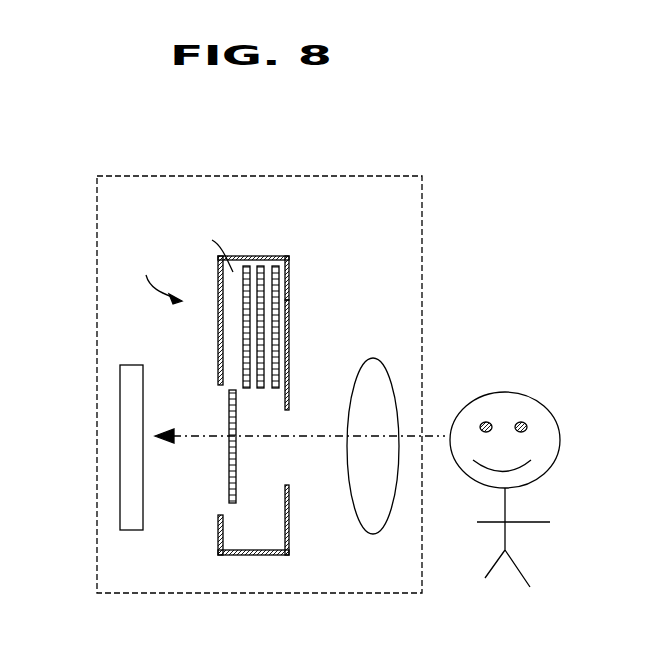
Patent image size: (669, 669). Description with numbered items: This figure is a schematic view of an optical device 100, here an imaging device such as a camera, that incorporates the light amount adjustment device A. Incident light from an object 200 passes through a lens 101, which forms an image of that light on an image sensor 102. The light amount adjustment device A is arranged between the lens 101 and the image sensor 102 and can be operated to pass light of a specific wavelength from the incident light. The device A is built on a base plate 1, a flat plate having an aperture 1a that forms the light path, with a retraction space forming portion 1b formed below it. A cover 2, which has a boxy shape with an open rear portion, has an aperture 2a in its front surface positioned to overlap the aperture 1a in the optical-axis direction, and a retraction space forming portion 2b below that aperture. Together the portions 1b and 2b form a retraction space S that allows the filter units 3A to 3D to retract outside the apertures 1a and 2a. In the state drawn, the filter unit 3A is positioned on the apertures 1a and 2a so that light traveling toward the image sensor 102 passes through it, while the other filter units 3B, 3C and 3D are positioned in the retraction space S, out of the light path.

The optical device 100 is at (422, 265).
The lens 101 is at (378, 358).
The image sensor 102 is at (120, 382).
The object 200 is at (523, 392).
The base plate 1 is at (251, 404).
The aperture 1a is at (218, 386).
The retraction space forming portion 1b is at (218, 290).
The cover 2 is at (289, 267).
The aperture 2a is at (288, 412).
The retraction space forming portion 2b is at (289, 305).
The filter unit 3A is at (229, 492).
The filter unit 3B is at (246, 265).
The filter unit 3C is at (261, 265).
The filter unit 3D is at (279, 264).
The retraction space S is at (215, 246).
The light amount adjustment device A is at (157, 275).